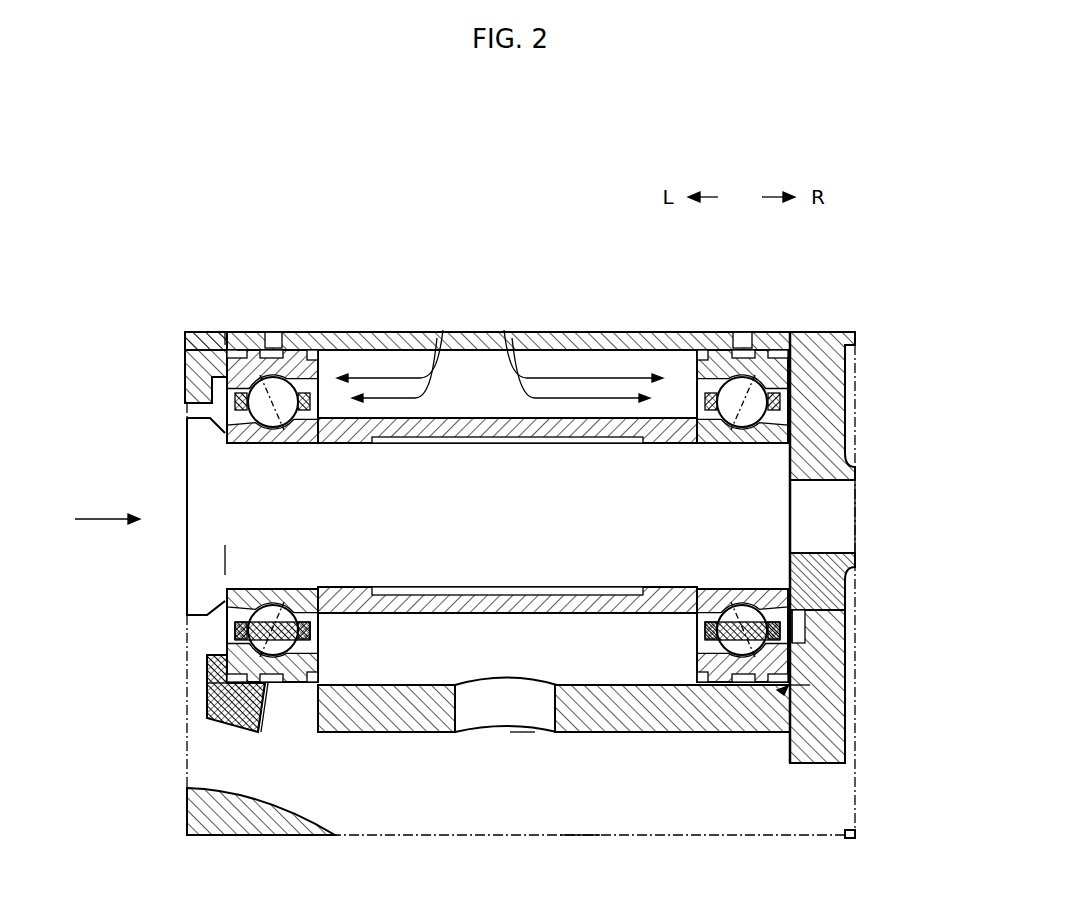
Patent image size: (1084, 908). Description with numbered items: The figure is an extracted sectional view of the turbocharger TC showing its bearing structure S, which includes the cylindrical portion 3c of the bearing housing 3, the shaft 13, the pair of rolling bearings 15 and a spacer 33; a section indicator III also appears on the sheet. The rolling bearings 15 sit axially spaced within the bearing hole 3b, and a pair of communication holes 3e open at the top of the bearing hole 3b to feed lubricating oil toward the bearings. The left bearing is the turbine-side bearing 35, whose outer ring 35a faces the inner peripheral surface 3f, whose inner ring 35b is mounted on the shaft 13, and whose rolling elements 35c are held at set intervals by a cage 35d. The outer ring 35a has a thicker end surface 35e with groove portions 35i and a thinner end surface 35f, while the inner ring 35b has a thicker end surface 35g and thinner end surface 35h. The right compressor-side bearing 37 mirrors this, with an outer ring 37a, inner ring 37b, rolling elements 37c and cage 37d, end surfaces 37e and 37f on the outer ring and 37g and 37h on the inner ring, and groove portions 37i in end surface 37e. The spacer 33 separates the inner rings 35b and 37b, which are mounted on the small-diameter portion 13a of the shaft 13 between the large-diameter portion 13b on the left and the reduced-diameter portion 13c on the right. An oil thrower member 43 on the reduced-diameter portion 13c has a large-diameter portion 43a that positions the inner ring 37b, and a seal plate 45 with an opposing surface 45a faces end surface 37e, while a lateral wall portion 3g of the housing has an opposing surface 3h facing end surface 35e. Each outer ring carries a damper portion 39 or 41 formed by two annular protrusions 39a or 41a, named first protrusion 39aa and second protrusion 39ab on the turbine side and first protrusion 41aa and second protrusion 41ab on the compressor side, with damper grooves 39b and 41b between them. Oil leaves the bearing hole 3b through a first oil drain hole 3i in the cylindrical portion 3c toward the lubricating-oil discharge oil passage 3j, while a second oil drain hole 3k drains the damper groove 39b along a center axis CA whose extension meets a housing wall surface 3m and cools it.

The bearing housing 3 is at (568, 333).
The bearing hole 3b is at (601, 333).
The cylindrical portion 3c is at (775, 730).
The communication holes 3e is at (742, 333).
The inner peripheral surface 3f is at (250, 690).
The lateral wall portion 3g is at (200, 352).
The opposing surface 3h is at (255, 650).
The first oil drain hole 3i is at (522, 730).
The lubricating-oil discharge oil passage 3j is at (570, 829).
The second oil drain hole 3k is at (265, 730).
The housing wall surface 3m is at (235, 800).
The shaft 13 is at (510, 530).
The small-diameter portion 13a is at (240, 560).
The large-diameter portion 13b is at (197, 525).
The reduced-diameter portion 13c is at (830, 522).
The rolling bearings 15 is at (500, 352).
The spacer 33 is at (482, 690).
The turbine-side bearing 35 is at (415, 333).
The outer ring 35a is at (248, 690).
The inner ring 35b is at (318, 660).
The rolling elements 35c is at (215, 380).
The cage 35d is at (195, 418).
The end surface 35e is at (185, 333).
The end surface 35f is at (380, 333).
The end surface 35g is at (370, 690).
The end surface 35h is at (235, 598).
The groove portions 35i is at (225, 333).
The compressor-side bearing 37 is at (540, 333).
The outer ring 37a is at (728, 690).
The inner ring 37b is at (692, 660).
The rolling elements 37c is at (852, 380).
The cage 37d is at (848, 420).
The end surface 37e is at (855, 333).
The end surface 37f is at (650, 333).
The end surface 37g is at (625, 690).
The end surface 37h is at (800, 625).
The groove portions 37i is at (790, 333).
The damper portion 39 is at (335, 333).
The annular protrusions 39a is at (265, 680).
The damper groove 39b is at (285, 685).
The first protrusion 39aa is at (247, 333).
The second protrusion 39ab is at (297, 333).
The damper portion 41 is at (680, 333).
The annular protrusions 41a is at (840, 760).
The damper groove 41b is at (845, 766).
The first protrusion 41aa is at (768, 333).
The second protrusion 41ab is at (717, 333).
The oil thrower member 43 is at (860, 560).
The large-diameter portion 43a is at (845, 585).
The seal plate 45 is at (810, 715).
The opposing surface 45a is at (820, 700).
The turbocharger TC is at (172, 127).
The bearing structure S is at (227, 196).
The center axis CA is at (220, 850).
The section line III is at (93, 519).